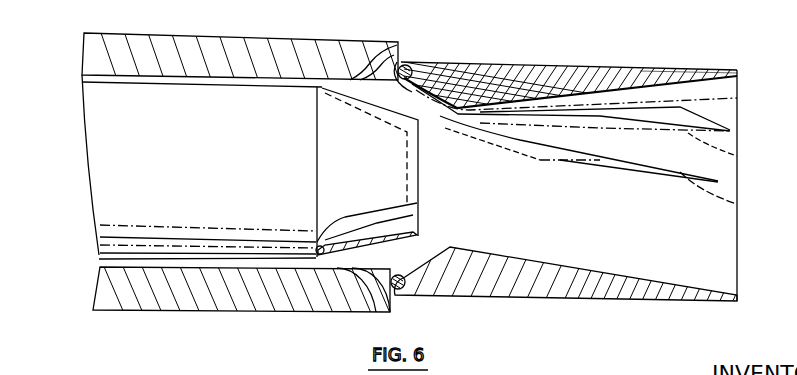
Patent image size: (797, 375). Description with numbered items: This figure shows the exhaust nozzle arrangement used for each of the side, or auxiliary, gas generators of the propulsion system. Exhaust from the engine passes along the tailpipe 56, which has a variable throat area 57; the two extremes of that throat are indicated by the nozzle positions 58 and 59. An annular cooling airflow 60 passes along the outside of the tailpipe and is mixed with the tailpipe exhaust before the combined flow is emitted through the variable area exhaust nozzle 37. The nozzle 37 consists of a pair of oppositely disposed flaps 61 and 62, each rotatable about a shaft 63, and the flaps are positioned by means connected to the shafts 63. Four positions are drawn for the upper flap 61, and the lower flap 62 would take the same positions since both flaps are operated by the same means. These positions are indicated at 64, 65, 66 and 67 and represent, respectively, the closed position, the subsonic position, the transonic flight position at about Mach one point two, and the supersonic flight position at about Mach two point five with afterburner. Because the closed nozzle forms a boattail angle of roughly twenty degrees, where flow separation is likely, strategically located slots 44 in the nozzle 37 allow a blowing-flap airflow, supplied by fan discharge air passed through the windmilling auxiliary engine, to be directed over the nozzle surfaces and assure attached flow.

The variable area exhaust nozzle 37 is at (740, 253).
The slots 44 is at (390, 54).
The tailpipe 56 is at (199, 167).
The variable throat area 57 is at (422, 175).
The nozzle position 58 is at (418, 228).
The nozzle position 59 is at (387, 222).
The annular cooling airflow 60 is at (216, 79).
The flap 61 is at (620, 65).
The flap 62 is at (524, 296).
The shaft 63 is at (402, 290).
The closed position 64 is at (740, 205).
The subsonic position 65 is at (740, 157).
The transonic flight position 66 is at (740, 118).
The supersonic flight position 67 is at (693, 70).